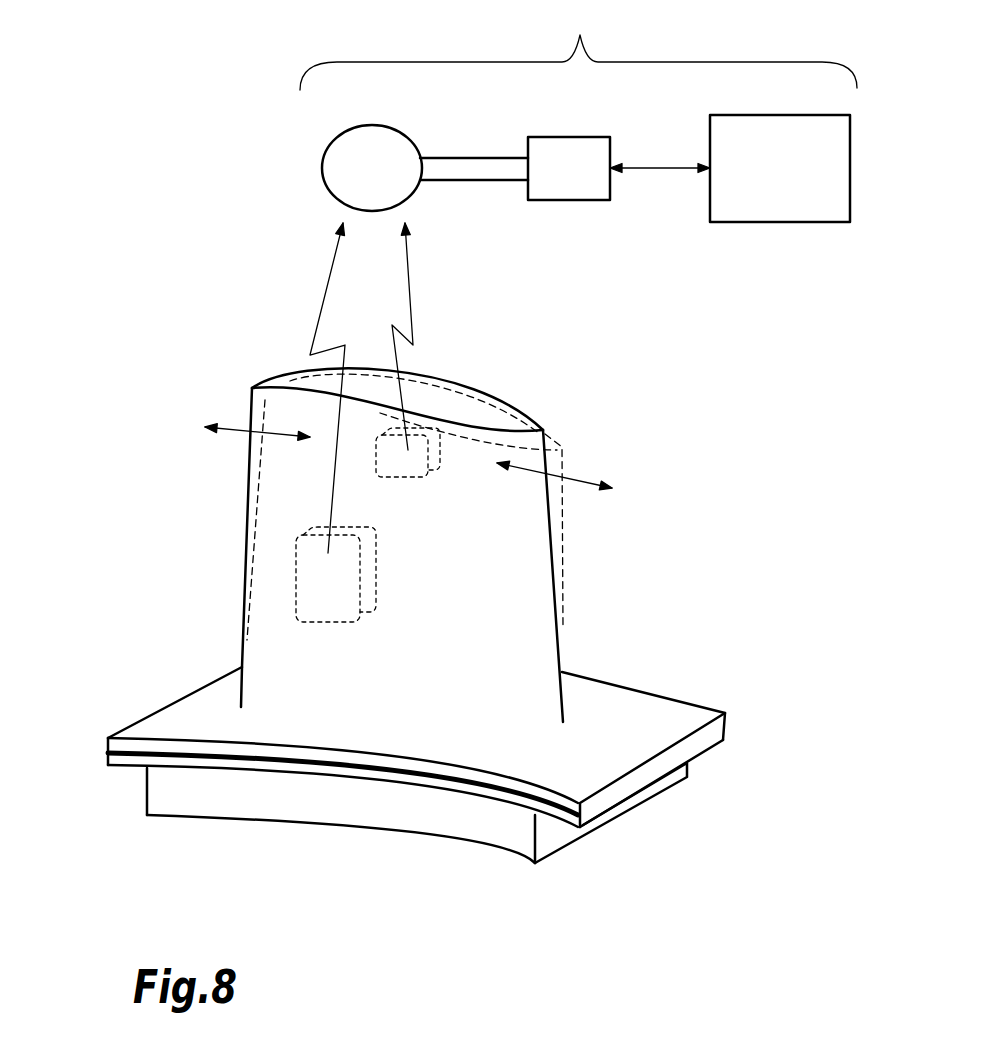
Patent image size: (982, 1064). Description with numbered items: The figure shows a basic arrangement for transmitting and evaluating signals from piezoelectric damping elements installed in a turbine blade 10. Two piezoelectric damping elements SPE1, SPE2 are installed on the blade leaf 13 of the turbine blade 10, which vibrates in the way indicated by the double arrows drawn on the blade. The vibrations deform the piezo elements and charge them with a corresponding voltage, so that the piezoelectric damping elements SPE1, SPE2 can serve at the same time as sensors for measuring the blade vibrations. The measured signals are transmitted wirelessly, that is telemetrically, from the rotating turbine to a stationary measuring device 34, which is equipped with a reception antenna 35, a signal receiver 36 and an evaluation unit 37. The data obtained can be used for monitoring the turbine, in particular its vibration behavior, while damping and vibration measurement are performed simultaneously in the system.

The turbine blade 10 is at (623, 625).
The blade leaf 13 is at (495, 637).
The measuring device 34 is at (578, 45).
The antenna 35 is at (322, 167).
The signal receiver 36 is at (567, 177).
The evaluation unit 37 is at (802, 188).
The piezoelectric damping element SPE1 is at (318, 577).
The piezoelectric damping element SPE2 is at (427, 447).